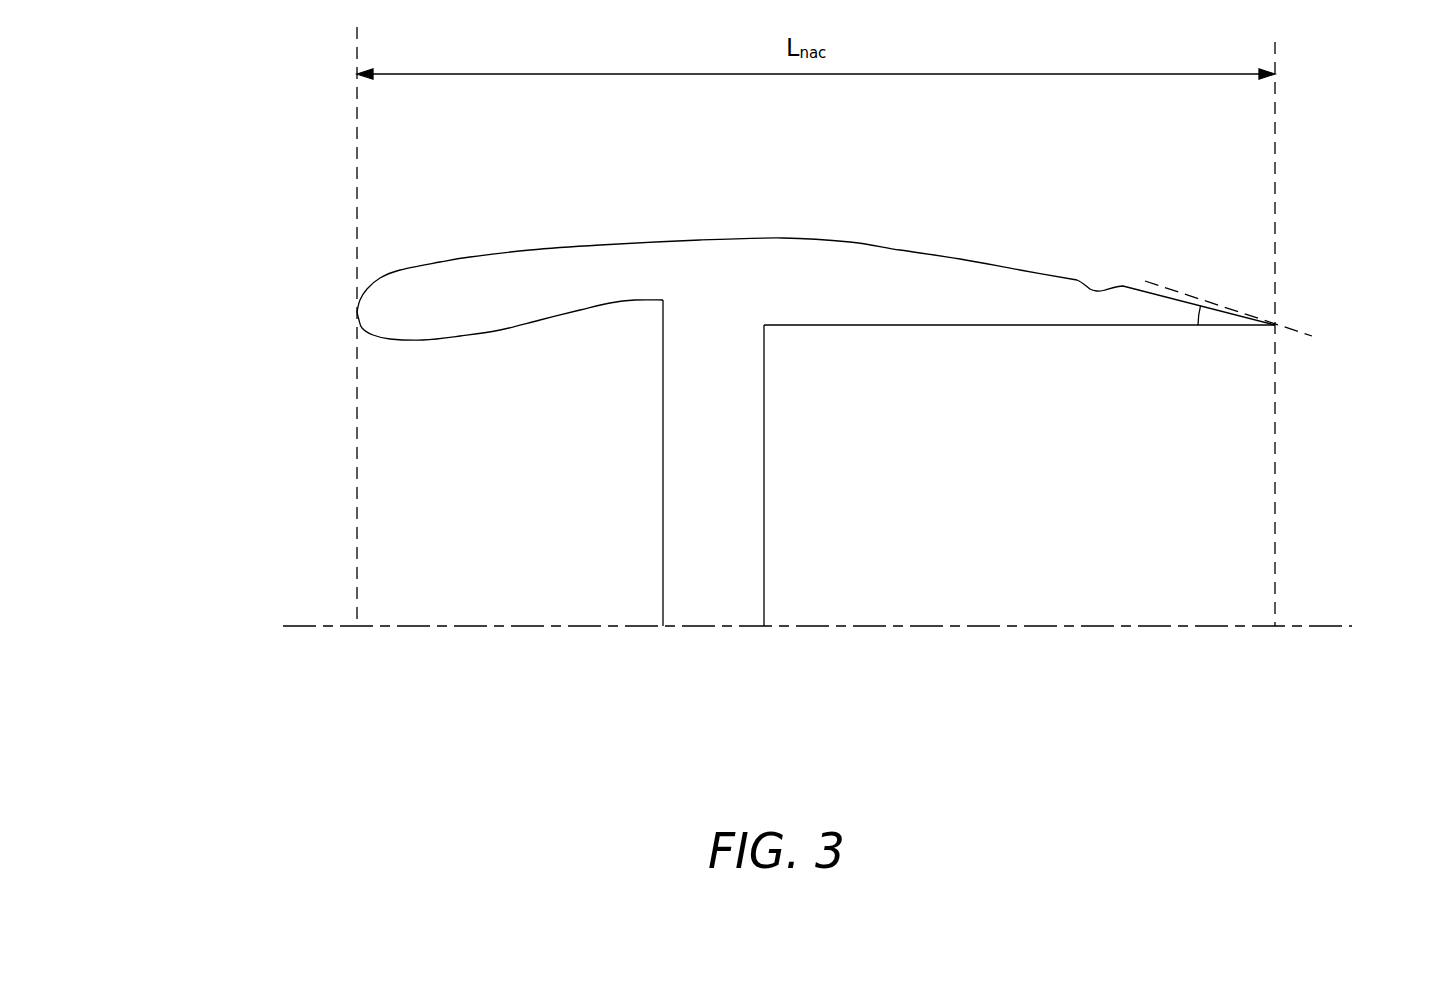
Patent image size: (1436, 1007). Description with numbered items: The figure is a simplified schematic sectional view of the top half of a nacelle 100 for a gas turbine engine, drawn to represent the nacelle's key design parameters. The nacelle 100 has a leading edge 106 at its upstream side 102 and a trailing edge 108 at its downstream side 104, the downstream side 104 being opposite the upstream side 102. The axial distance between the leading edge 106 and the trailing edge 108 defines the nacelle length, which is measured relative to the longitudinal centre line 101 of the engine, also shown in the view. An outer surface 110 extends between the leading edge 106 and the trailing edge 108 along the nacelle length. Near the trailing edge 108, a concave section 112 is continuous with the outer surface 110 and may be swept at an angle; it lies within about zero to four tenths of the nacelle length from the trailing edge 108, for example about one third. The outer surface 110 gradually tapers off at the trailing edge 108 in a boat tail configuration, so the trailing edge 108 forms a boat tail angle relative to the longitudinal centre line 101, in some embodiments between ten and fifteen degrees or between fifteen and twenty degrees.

The nacelle 100 is at (1062, 165).
The longitudinal centre line 101 is at (1160, 626).
The upstream side 102 is at (215, 358).
The downstream side 104 is at (1288, 378).
The leading edge 106 is at (357, 313).
The trailing edge 108 is at (1275, 325).
The outer surface 110 is at (468, 258).
The concave section 112 is at (1098, 291).